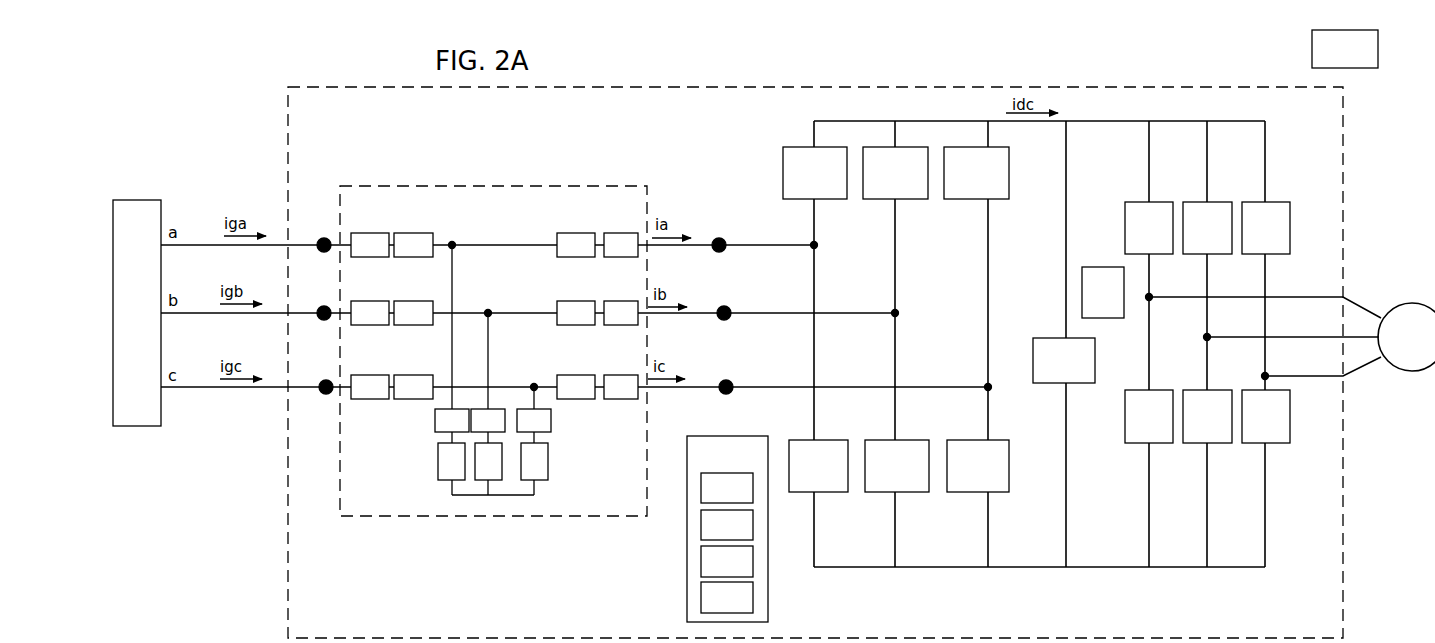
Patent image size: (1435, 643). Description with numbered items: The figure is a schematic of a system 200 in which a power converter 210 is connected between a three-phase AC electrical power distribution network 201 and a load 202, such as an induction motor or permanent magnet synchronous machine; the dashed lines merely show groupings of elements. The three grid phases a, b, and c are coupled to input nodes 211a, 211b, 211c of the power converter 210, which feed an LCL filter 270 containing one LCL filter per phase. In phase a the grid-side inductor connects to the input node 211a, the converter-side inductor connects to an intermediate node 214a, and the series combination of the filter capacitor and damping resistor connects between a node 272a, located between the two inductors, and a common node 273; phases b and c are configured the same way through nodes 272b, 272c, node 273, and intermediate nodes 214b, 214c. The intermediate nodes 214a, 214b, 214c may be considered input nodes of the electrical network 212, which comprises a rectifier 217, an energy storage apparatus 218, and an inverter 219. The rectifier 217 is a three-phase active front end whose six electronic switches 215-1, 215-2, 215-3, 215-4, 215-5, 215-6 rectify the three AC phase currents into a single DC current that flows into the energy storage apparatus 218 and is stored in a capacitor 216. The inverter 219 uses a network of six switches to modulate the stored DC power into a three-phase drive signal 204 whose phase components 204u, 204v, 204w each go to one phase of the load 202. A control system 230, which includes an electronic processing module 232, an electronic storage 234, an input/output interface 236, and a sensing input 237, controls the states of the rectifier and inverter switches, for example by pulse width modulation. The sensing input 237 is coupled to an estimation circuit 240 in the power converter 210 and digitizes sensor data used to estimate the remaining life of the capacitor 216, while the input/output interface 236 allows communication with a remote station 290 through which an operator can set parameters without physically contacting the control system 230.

The system 200 is at (728, 41).
The three-phase AC electrical power distribution network 201 is at (137, 313).
The load 202 is at (1406, 337).
The three-phase drive signal 204 is at (1275, 312).
The phase component 204u is at (1334, 289).
The phase component 204v is at (1334, 331).
The phase component 204w is at (1334, 365).
The power converter 210 is at (815, 362).
The input node 211a is at (323, 238).
The input node 211b is at (320, 308).
The input node 211c is at (324, 383).
The electrical network 212 is at (808, 67).
The intermediate node 214a is at (719, 238).
The intermediate node 214b is at (724, 306).
The intermediate node 214c is at (726, 380).
The electronic switch 215-1 is at (815, 173).
The electronic switch 215-2 is at (978, 466).
The electronic switch 215-3 is at (895, 173).
The electronic switch 215-4 is at (818, 466).
The electronic switch 215-5 is at (976, 173).
The electronic switch 215-6 is at (897, 466).
The capacitor 216 is at (1064, 360).
The rectifier 217 is at (896, 376).
The energy storage apparatus 218 is at (1046, 376).
The inverter 219 is at (1186, 376).
The control system 230 is at (727, 529).
The electronic processing module 232 is at (727, 488).
The electronic storage 234 is at (727, 525).
The input/output interface 236 is at (727, 561).
The sensing input 237 is at (727, 597).
The estimation circuit 240 is at (1103, 292).
The LCL filter 270 is at (493, 372).
The node 272a is at (453, 241).
The node 272b is at (489, 309).
The node 272c is at (536, 384).
The node 273 is at (511, 495).
The remote station 290 is at (1345, 49).